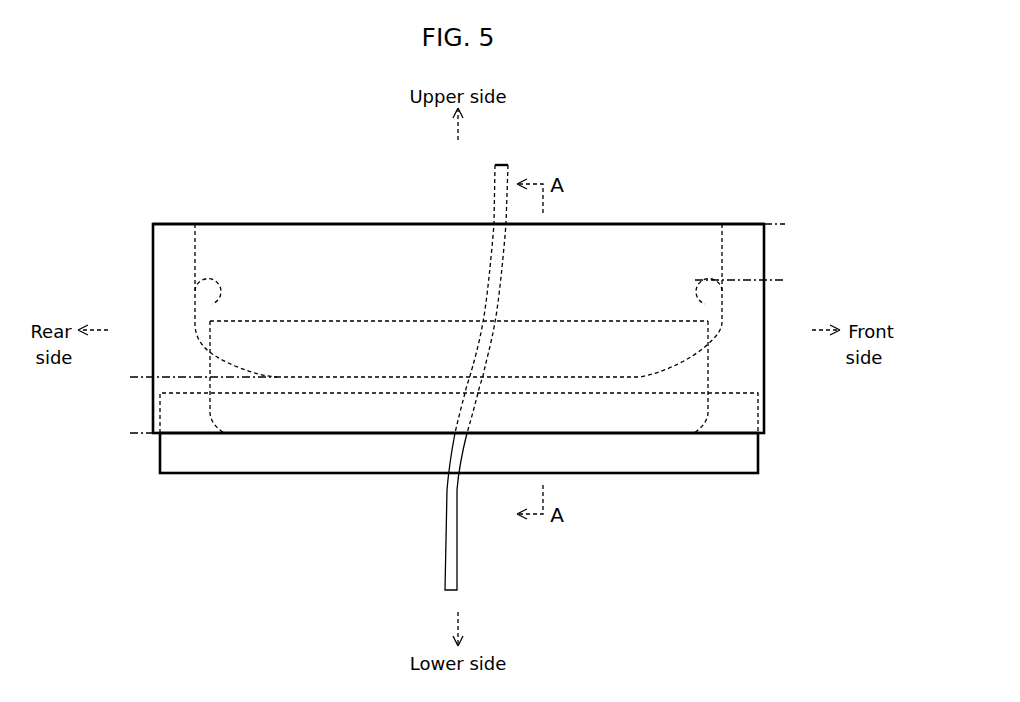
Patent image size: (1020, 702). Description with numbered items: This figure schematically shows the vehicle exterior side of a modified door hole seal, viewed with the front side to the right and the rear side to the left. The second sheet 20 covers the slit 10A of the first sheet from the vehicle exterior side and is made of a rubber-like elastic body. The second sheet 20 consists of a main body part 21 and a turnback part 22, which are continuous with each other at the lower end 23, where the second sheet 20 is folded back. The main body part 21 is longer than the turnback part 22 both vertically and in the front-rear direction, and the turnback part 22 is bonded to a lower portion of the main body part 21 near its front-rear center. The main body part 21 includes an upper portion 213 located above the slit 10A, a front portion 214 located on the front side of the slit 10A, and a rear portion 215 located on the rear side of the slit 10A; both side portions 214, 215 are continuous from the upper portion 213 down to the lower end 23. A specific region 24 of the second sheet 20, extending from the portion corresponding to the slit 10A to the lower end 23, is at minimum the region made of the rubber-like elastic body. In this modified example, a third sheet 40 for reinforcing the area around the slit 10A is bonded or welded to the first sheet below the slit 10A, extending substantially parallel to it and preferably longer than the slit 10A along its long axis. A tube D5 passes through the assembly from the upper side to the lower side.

The second sheet 20 is at (663, 181).
The main body part 21 is at (279, 232).
The turnback part 22 is at (278, 418).
The lower end 23 is at (340, 434).
The specific region 24 is at (153, 377).
The third sheet 40 is at (759, 454).
The upper portion 213 is at (783, 224).
The front portion 214 is at (722, 220).
The rear portion 215 is at (153, 220).
The slit 10A is at (620, 378).
The supply tube D5 is at (449, 504).